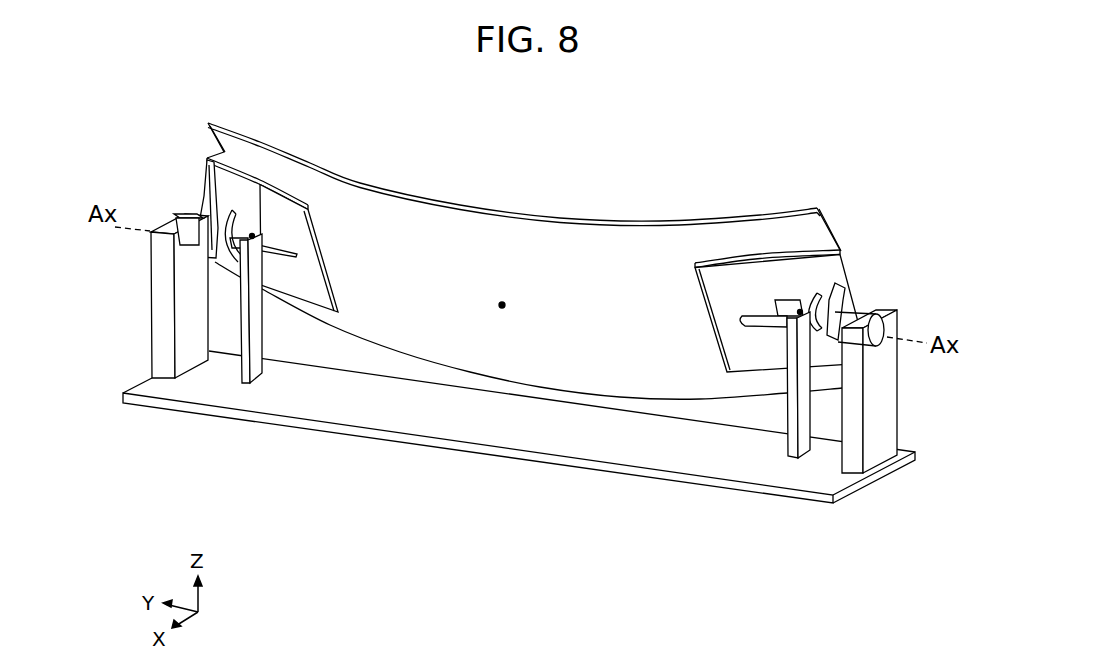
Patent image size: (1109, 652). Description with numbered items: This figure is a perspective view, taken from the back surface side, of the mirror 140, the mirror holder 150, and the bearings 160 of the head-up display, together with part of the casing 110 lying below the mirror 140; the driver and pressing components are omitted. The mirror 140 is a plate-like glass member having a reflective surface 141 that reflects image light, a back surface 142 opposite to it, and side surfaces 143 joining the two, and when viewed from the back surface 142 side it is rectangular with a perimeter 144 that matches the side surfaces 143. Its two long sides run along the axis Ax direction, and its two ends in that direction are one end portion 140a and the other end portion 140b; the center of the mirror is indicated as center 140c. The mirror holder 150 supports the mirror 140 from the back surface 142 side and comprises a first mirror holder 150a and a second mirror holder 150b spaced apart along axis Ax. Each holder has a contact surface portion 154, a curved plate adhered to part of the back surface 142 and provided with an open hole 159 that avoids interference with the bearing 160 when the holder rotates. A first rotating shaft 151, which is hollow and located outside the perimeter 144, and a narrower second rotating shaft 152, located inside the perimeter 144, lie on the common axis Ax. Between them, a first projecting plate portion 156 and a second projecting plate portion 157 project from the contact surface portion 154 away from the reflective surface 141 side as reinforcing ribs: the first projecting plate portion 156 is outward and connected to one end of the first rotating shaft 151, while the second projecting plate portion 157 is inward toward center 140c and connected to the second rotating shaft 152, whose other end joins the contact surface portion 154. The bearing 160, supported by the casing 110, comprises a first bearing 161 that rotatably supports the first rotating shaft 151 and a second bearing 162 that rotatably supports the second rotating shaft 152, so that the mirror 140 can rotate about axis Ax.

The casing 110 is at (523, 456).
The mirror 140 is at (518, 236).
The one end portion 140a is at (812, 240).
The other end portion 140b is at (223, 153).
The center of mirror 140c is at (503, 320).
The reflective surface 141 is at (517, 213).
The back surface 142 is at (452, 220).
The side surfaces 143 is at (518, 185).
The perimeter 144 is at (210, 148).
The mirror holder 150 is at (564, 376).
The first mirror holder 150a is at (720, 368).
The second mirror holder 150b is at (333, 318).
The first rotating shaft 151 is at (187, 230).
The second rotating shaft 152 is at (255, 249).
The contact surface portion 154 is at (318, 281).
The first projecting plate portion 156 is at (203, 222).
The second projecting plate portion 157 is at (233, 227).
The open hole 159 is at (237, 230).
The bearing 160 is at (520, 409).
The first bearing 161 is at (158, 315).
The second bearing 162 is at (239, 292).